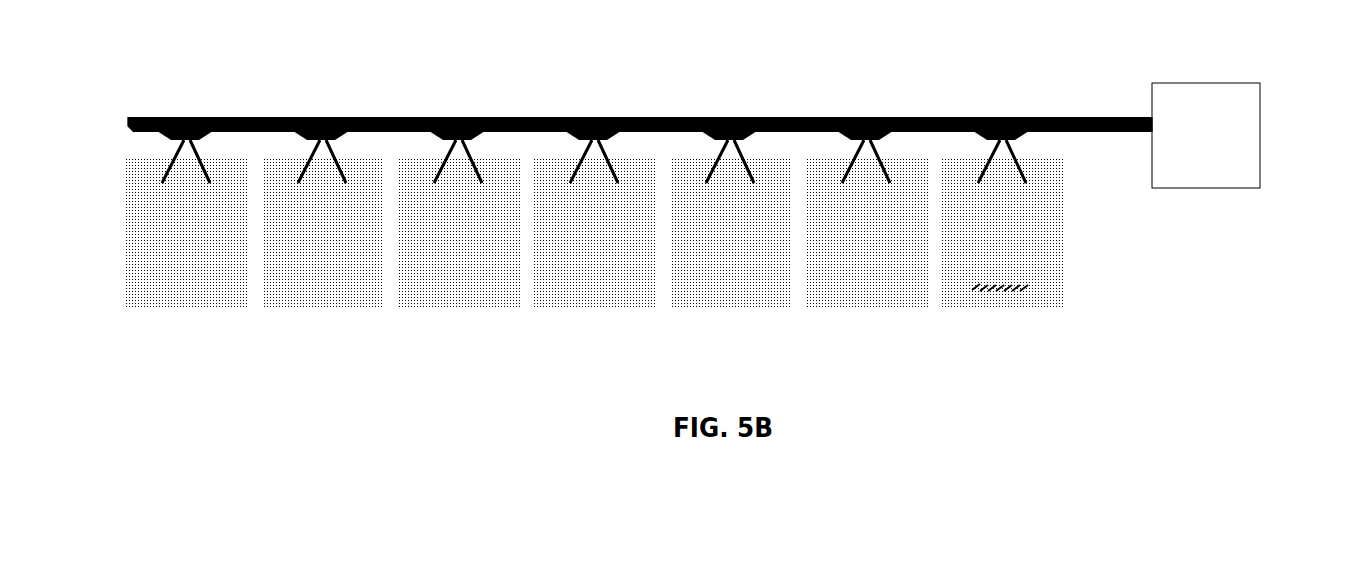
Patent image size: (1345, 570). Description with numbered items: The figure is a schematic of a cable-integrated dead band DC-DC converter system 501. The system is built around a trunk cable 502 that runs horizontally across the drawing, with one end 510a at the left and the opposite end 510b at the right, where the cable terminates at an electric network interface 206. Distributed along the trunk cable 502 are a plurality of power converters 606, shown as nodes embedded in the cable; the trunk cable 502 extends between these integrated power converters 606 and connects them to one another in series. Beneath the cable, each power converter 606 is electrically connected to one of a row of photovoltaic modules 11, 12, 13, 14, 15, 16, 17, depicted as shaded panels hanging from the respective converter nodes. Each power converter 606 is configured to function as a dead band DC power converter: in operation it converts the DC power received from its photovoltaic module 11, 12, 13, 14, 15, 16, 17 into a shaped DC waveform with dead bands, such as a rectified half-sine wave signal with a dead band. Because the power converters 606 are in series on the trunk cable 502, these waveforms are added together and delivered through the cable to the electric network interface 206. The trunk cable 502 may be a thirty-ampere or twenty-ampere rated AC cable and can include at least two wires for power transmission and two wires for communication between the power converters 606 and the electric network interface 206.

The cable-integrated converter system 501 is at (1275, 48).
The trunk cable 502 is at (955, 118).
The first end of substrate 510a is at (132, 117).
The second end of substrate 510b is at (1100, 118).
The power converter 606 is at (186, 118).
The photovoltaic module 11 is at (180, 308).
The photovoltaic module 12 is at (328, 308).
The photovoltaic module 13 is at (478, 308).
The photovoltaic module 14 is at (600, 308).
The photovoltaic module 15 is at (735, 308).
The photovoltaic module 16 is at (865, 308).
The photovoltaic module 17 is at (995, 308).
The electric network interface 206 is at (1206, 135).